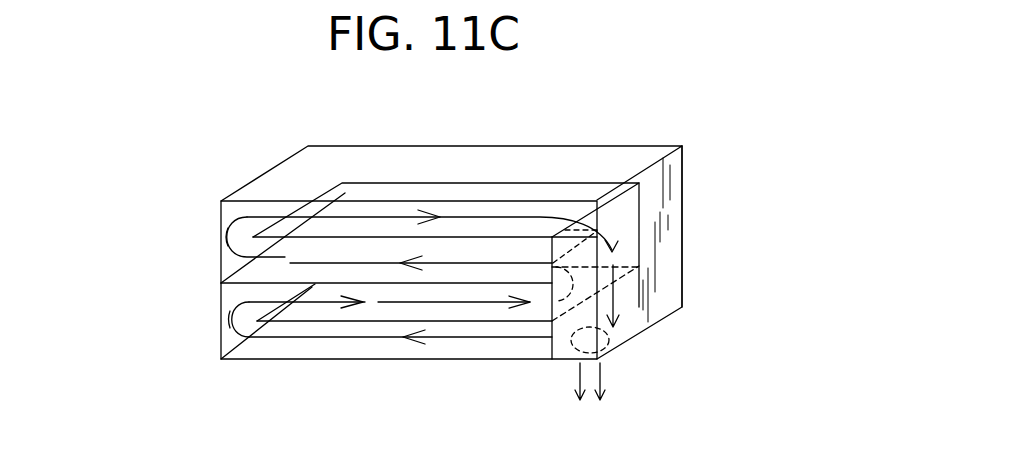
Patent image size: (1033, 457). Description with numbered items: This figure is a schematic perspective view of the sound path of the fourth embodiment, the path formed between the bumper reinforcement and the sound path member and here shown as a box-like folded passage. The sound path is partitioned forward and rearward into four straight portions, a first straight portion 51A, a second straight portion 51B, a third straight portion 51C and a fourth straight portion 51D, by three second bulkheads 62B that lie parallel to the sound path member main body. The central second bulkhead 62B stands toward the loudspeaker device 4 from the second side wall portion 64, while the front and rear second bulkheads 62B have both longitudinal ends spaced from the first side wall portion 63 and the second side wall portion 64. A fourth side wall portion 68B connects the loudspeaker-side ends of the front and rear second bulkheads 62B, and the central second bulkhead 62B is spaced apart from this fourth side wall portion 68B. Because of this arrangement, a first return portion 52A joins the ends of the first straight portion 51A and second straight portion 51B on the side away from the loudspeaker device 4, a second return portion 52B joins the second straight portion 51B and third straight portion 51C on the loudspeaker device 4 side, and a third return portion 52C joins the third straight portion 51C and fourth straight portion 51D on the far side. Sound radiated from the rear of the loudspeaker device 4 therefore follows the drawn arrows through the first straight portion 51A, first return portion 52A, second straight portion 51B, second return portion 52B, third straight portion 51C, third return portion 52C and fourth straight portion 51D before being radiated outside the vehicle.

The loudspeaker device 4 is at (623, 345).
The first straight portion 51A is at (434, 345).
The second straight portion 51B is at (400, 303).
The third straight portion 51C is at (498, 250).
The fourth straight portion 51D is at (397, 212).
The first return portion 52A is at (230, 320).
The second return portion 52B is at (577, 287).
The third return portion 52C is at (230, 241).
The second bulkhead 62B is at (342, 228).
The first side wall portion 63 is at (670, 198).
The second side wall portion 64 is at (230, 295).
The fourth side wall portion 68B is at (633, 200).